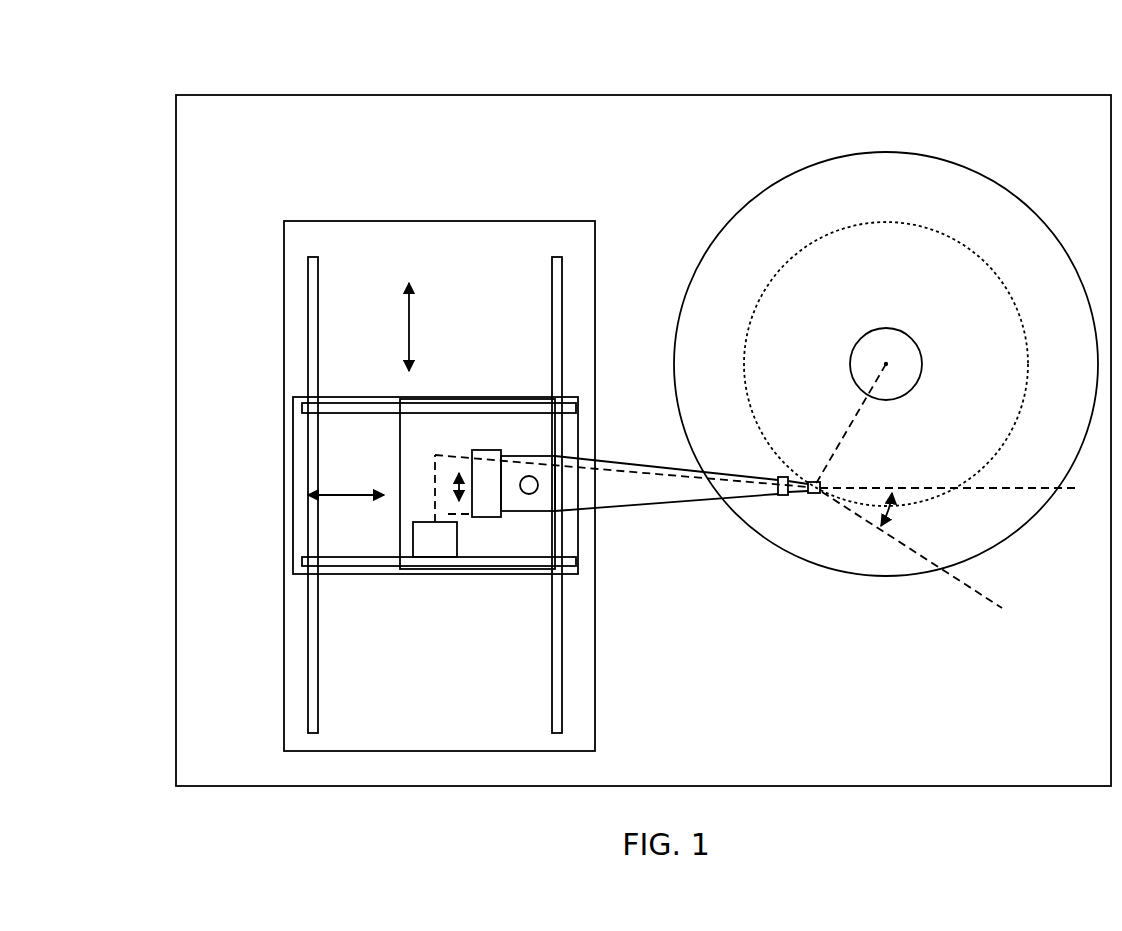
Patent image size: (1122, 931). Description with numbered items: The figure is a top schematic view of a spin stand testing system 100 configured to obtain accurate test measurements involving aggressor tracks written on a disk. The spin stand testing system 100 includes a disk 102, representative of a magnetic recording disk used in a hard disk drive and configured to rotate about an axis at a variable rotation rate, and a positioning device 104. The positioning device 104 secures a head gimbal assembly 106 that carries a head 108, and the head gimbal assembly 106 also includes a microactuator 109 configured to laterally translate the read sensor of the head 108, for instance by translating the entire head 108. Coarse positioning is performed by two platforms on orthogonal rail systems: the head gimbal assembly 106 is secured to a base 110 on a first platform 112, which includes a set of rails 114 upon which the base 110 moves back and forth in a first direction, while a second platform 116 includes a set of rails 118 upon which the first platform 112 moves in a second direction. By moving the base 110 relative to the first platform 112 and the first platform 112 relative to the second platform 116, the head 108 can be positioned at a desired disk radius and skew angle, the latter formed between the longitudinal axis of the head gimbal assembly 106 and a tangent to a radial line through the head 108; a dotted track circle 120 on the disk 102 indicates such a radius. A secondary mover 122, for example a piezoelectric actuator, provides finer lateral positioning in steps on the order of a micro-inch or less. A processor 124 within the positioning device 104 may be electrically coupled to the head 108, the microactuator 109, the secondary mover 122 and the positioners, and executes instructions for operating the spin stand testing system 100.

The spin stand testing system 100 is at (153, 92).
The disk 102 is at (868, 172).
The positioning device 104 is at (508, 770).
The head gimbal assembly 106 is at (682, 494).
The head 108 is at (814, 495).
The microactuator 109 is at (783, 496).
The base 110 is at (528, 556).
The first platform 112 is at (300, 457).
The set of rails 114 is at (303, 410).
The second platform 116 is at (382, 232).
The set of rails 118 is at (310, 271).
The measurement track circle 120 is at (948, 237).
The secondary mover 122 is at (491, 509).
The processor 124 is at (433, 558).